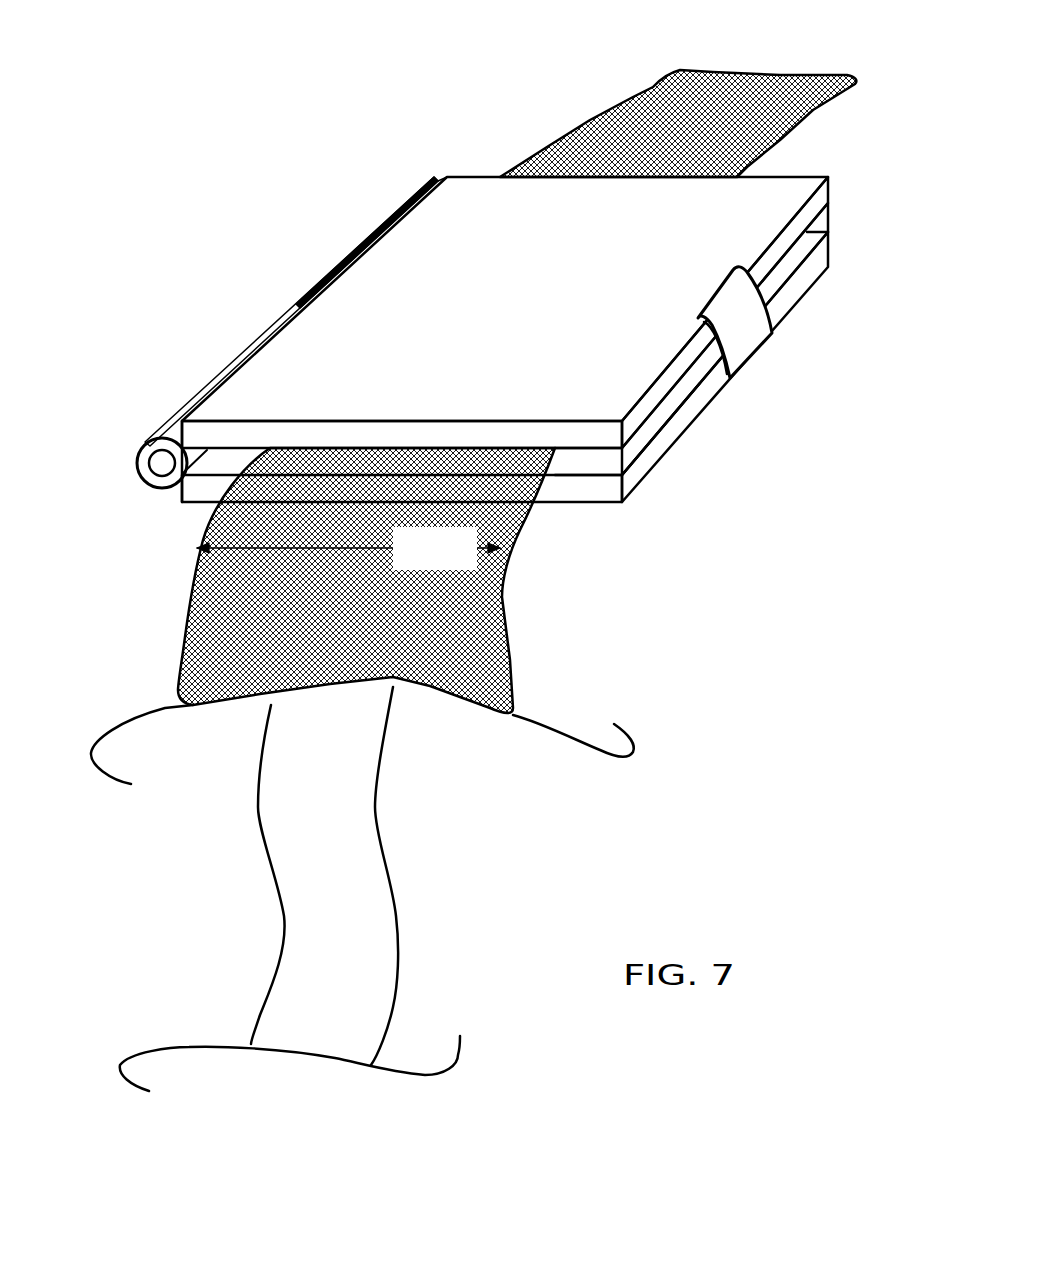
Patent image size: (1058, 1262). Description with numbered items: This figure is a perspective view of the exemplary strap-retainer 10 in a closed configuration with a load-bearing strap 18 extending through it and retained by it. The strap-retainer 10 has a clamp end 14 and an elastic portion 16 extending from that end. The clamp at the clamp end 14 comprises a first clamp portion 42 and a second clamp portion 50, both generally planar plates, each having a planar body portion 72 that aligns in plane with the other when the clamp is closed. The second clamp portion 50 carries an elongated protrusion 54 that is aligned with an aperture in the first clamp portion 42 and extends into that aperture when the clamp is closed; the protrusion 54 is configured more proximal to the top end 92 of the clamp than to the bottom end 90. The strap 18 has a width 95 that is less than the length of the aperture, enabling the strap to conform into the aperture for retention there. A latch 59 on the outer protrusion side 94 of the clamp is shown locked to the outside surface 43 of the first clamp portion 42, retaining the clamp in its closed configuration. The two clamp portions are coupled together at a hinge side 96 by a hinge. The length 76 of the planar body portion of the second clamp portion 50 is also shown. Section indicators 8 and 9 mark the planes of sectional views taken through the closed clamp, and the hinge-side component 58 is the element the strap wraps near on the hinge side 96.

The section line 8- 8 is at (898, 258).
The section line 9- 9 is at (735, 20).
The strap-retainer 10 is at (477, 329).
The clamp end 14 is at (523, 350).
The elastic portion 16 is at (309, 1011).
The load-bearing strap 18 is at (188, 626).
The first clamp portion 42 is at (640, 475).
The outside surface 43 is at (715, 400).
The second clamp portion 50 is at (260, 395).
The protrusion 54 is at (440, 205).
The rod 58 is at (137, 467).
The latch 59 is at (740, 335).
The planar body portion 72 is at (622, 377).
The length 76 is at (538, 186).
The bottom end 90 is at (580, 488).
The top end 92 is at (497, 177).
The side 94 is at (685, 415).
The width 95 is at (348, 548).
The hinge side 96 is at (207, 387).